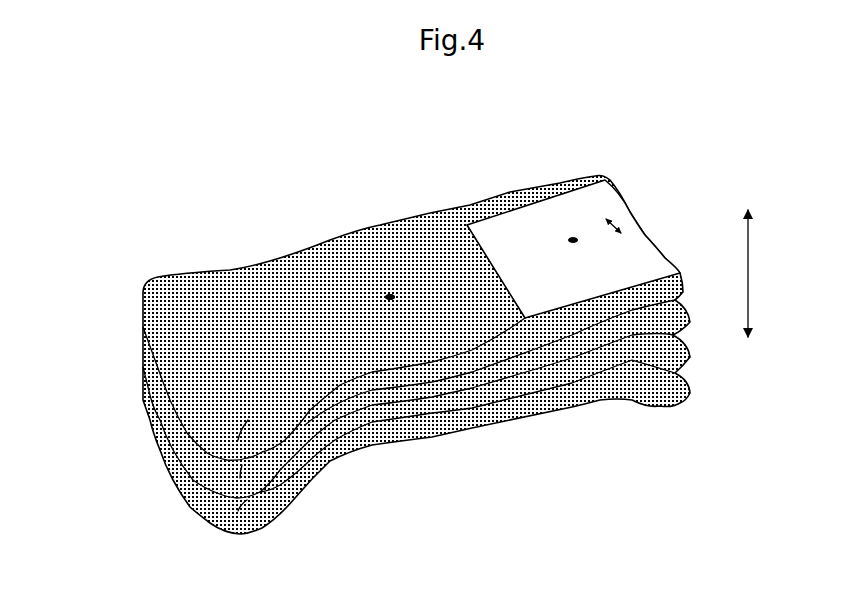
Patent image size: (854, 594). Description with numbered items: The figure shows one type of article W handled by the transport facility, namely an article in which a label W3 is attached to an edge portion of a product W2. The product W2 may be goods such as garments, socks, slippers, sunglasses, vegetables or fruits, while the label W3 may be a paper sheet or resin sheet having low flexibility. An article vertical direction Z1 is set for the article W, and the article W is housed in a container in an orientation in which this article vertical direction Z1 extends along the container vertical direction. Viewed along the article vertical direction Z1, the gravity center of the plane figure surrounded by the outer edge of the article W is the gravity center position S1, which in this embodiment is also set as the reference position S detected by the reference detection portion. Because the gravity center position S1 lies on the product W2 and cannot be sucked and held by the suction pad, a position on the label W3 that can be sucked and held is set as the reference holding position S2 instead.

The article W is at (414, 201).
The product W2 is at (188, 416).
The label W3 is at (617, 202).
The gravity center position S1 is at (389, 296).
The reference position S is at (390, 297).
The reference holding position S2 is at (573, 237).
The article vertical direction Z1 is at (771, 273).